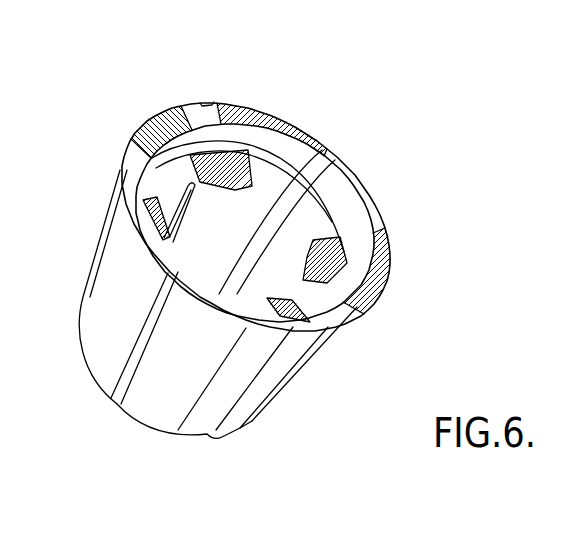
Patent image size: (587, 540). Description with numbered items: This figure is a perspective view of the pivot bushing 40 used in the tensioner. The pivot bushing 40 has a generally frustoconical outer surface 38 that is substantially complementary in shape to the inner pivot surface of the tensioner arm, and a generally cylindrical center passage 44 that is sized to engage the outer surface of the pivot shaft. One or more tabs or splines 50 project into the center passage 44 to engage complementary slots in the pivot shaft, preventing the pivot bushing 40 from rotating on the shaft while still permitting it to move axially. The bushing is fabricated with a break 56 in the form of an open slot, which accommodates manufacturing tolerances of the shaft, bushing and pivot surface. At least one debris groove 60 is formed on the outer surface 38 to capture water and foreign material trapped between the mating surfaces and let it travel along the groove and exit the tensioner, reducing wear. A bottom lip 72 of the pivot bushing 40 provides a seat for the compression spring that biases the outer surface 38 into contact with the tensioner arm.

The outer surface 38 is at (100, 302).
The pivot bushing 40 is at (143, 142).
The center passage 44 is at (242, 248).
The tabs or splines 50 is at (185, 183).
The break 56 is at (335, 158).
The debris groove 60 is at (114, 395).
The bottom lip 72 is at (325, 288).